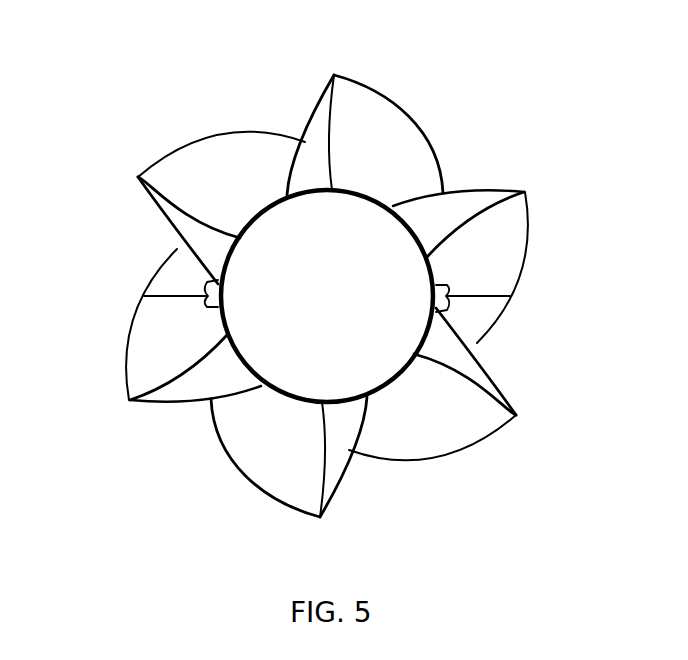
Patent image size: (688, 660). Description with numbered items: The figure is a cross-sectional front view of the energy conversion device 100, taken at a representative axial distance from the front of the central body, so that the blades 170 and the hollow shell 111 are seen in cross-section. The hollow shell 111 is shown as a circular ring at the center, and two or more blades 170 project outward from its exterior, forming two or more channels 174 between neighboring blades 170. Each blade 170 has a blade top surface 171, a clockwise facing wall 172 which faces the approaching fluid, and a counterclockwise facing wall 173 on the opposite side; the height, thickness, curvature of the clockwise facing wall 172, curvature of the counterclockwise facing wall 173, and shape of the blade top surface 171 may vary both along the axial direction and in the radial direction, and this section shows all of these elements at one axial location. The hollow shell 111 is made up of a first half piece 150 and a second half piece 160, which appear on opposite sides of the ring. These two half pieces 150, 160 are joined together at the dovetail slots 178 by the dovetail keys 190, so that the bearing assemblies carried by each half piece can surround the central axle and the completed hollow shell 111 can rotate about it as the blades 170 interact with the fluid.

The energy conversion device 100 is at (328, 283).
The hollow shell 111 is at (390, 389).
The first half piece 150 is at (162, 262).
The second half piece 160 is at (503, 316).
The blade 170 is at (528, 191).
The blade top surface 171 is at (374, 86).
The clockwise facing wall 172 is at (332, 126).
The counterclockwise facing wall 173 is at (302, 121).
The channel 174 is at (277, 401).
The dovetail slot 178 is at (449, 281).
The dovetail key 190 is at (209, 311).